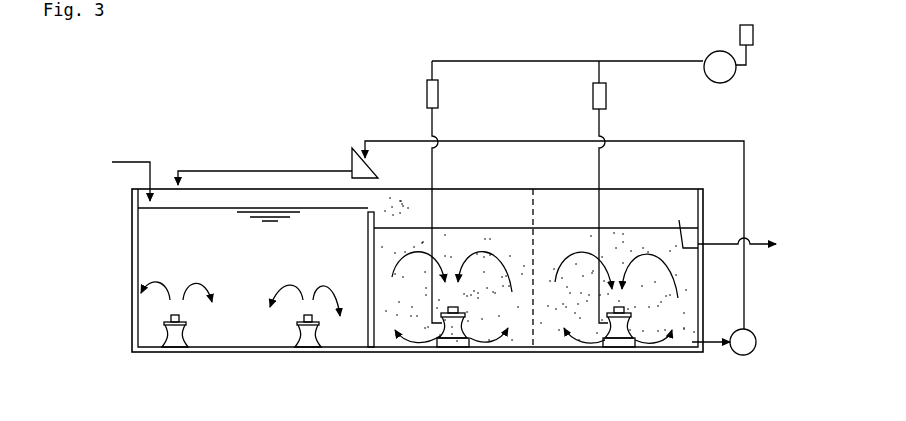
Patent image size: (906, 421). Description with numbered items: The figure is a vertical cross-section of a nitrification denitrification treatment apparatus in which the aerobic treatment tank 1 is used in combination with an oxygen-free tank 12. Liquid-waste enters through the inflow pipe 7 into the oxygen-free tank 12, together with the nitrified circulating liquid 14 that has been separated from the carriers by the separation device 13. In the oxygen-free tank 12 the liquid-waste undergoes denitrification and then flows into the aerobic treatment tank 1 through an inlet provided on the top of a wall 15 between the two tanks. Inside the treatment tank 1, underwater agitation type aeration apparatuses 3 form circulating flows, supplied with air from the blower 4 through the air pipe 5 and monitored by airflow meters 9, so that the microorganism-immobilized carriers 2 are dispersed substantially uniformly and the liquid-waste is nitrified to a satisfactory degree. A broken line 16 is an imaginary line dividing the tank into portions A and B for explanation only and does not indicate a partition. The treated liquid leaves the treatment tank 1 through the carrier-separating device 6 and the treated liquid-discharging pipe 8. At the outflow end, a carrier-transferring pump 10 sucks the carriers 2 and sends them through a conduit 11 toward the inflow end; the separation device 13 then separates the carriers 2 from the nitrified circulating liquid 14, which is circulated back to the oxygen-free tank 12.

The aerobic treatment tank 1 is at (493, 190).
The microorganism-immobilized carriers 2 is at (376, 166).
The air diffuser 3 is at (313, 334).
The blower 4 is at (725, 82).
The air pipe 5 is at (512, 62).
The carrier-separating device 6 is at (679, 220).
The inflow pipe 7 is at (126, 163).
The treated liquid-discharging pipe 8 is at (760, 242).
The airflow meter 9 is at (427, 91).
The carrier-transferring pump 10 is at (740, 355).
The conduit 11 is at (632, 142).
The oxygen-free tank 12 is at (244, 352).
The separation device 13 is at (352, 154).
The nitrified circulating liquid 14 is at (212, 170).
The wall 15 is at (369, 334).
The broken line 16 is at (528, 342).